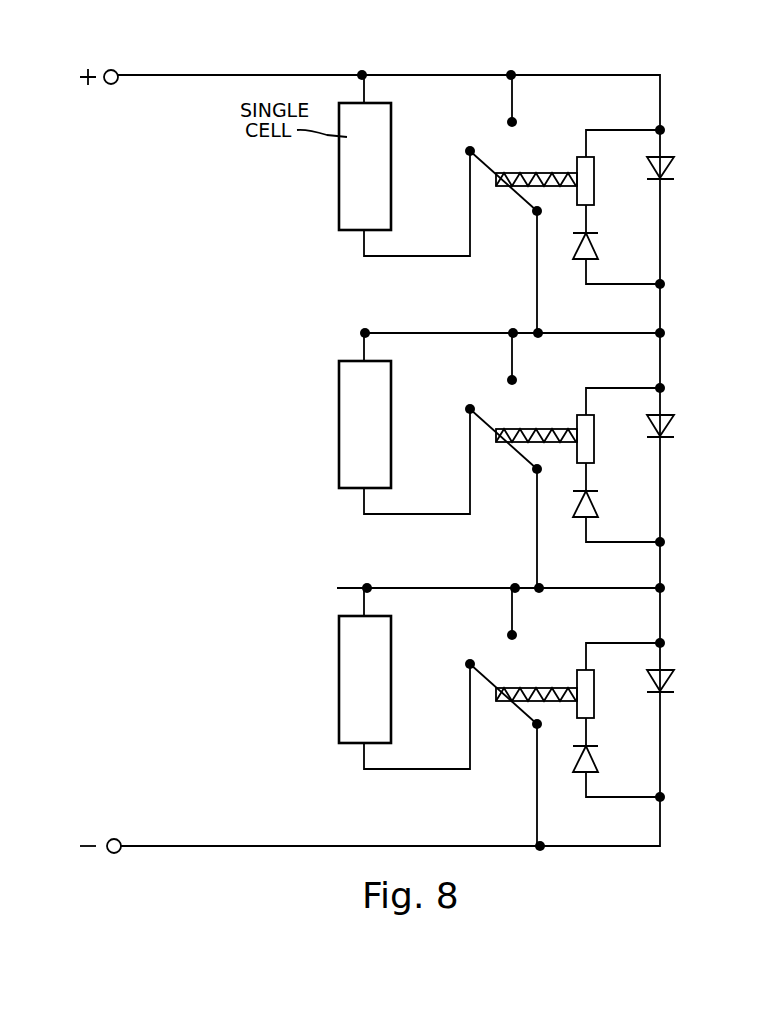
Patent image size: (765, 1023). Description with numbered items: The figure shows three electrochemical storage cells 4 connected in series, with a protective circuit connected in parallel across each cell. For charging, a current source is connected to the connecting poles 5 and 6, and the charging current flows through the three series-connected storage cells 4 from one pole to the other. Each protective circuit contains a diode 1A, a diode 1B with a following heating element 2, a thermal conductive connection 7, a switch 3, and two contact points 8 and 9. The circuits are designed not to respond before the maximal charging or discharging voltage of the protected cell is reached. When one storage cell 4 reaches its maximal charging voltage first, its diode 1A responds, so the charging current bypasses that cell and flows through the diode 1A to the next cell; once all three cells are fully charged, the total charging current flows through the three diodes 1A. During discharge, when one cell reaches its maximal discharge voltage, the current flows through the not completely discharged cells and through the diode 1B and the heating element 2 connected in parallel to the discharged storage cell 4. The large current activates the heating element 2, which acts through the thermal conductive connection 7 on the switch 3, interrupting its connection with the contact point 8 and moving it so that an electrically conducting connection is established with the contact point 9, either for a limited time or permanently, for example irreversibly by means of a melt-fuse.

The diode 1A is at (671, 164).
The diode 1B is at (598, 248).
The heating element 2 is at (595, 185).
The switch 3 is at (523, 199).
The storage cell 4 is at (339, 171).
The connecting pole 5 is at (116, 71).
The connecting pole 6 is at (120, 840).
The thermal conductive connection 7 is at (530, 172).
The contact point 8 is at (467, 148).
The contact point 9 is at (514, 120).